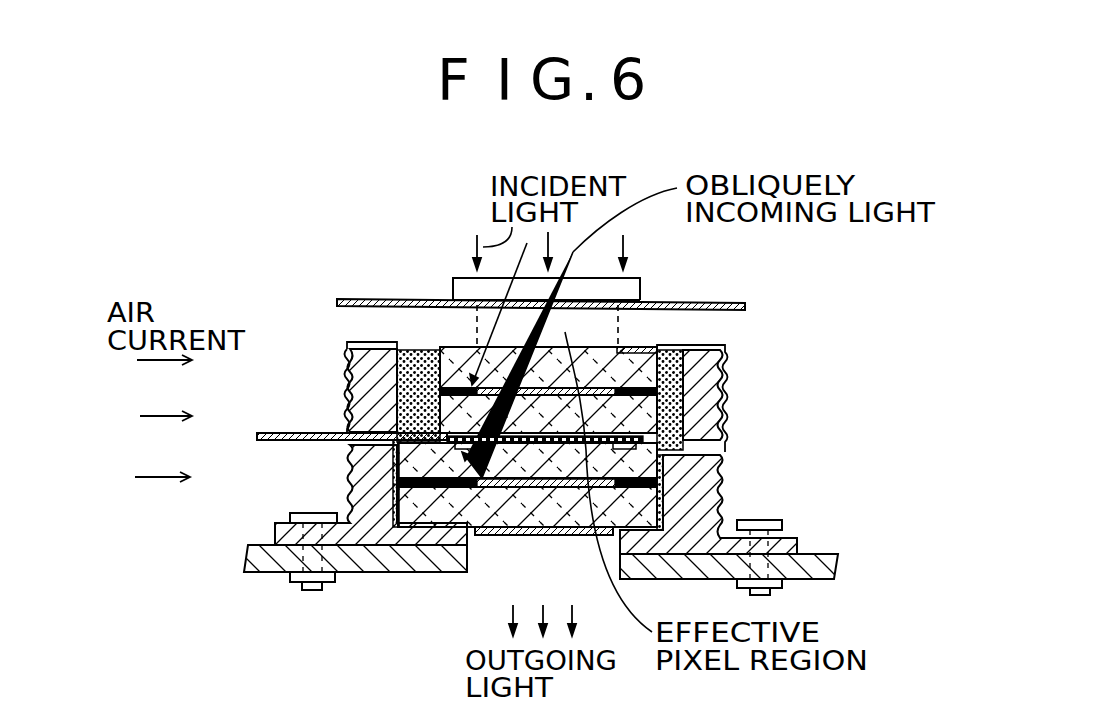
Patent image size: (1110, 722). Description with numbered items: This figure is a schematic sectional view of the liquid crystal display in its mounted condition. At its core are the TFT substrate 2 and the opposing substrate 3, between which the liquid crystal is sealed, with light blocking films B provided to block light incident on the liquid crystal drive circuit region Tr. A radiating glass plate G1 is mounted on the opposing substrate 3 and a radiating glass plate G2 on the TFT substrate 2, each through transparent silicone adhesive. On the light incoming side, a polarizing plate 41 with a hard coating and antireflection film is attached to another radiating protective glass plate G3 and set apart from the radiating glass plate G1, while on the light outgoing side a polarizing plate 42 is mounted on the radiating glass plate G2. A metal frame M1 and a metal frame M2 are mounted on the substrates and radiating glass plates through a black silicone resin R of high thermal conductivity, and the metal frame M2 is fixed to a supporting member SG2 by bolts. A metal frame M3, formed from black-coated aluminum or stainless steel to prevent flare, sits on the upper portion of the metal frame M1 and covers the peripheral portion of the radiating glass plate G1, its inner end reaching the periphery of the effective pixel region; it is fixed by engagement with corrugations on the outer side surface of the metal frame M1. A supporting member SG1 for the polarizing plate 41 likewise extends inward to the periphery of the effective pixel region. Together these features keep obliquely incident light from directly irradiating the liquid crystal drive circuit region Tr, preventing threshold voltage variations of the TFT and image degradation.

The radiating glass plate G1 is at (440, 343).
The radiating glass plate G2 is at (657, 490).
The radiating (protective) glass plate G3 is at (458, 278).
The light blocking film B is at (460, 386).
The polarizing plate 41 is at (610, 300).
The polarizing plate 42 is at (492, 535).
The opposing substrate 3 is at (647, 347).
The TFT substrate 2 is at (372, 525).
The supporting member SG1 is at (742, 302).
The supporting member SG2 is at (840, 566).
The metal frame M1 is at (352, 393).
The metal frame M2 is at (352, 490).
The metal frame M3 is at (397, 343).
The black silicone resin R is at (407, 413).
The liquid crystal drive circuit region Tr is at (663, 463).